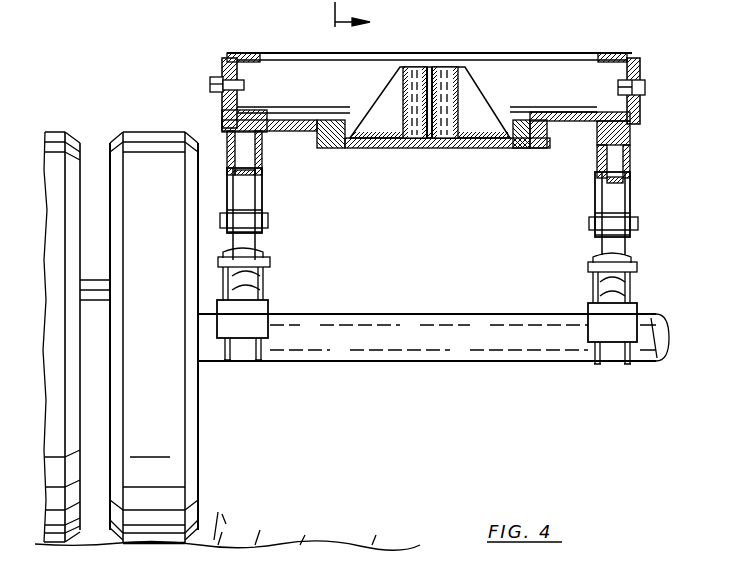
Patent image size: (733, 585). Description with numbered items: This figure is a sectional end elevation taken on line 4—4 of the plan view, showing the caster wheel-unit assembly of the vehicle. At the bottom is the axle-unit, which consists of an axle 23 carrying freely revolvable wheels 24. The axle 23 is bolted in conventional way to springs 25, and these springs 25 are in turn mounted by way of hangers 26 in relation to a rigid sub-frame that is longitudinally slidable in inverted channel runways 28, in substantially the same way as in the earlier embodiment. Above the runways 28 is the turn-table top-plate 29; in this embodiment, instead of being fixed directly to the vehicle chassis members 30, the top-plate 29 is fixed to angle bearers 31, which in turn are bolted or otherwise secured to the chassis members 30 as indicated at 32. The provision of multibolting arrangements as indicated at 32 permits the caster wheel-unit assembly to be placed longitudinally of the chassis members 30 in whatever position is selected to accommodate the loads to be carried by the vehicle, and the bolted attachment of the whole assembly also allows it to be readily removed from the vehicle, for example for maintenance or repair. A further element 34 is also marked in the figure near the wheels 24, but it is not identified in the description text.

The section line 4— 4 is at (341, 22).
The axle 23 is at (370, 323).
The wheels 24 is at (190, 440).
The springs 25 is at (247, 245).
The hangers 26 is at (263, 188).
The inverted channel runways 28 is at (225, 147).
The turn-table top-plate 29 is at (295, 132).
The vehicle chassis members 30 is at (241, 53).
The angle bearers 31 is at (225, 63).
The multibolting arrangement 32 is at (213, 82).
The tire 34 is at (137, 149).